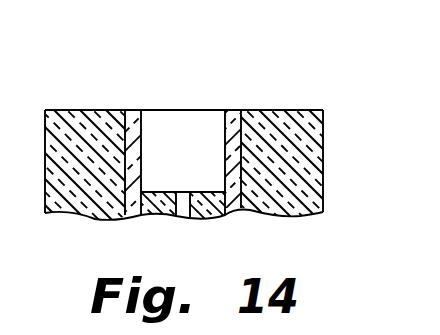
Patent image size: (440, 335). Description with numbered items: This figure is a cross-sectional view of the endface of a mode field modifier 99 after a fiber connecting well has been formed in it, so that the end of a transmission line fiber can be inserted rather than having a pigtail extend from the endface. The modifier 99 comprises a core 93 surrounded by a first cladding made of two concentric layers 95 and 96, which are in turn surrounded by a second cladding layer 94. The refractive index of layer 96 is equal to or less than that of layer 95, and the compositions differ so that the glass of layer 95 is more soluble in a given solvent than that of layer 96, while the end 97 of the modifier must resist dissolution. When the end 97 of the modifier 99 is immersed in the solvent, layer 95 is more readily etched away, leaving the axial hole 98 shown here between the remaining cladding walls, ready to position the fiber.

The core 93 is at (182, 194).
The second cladding layer 94 is at (283, 125).
The first cladding layer (inner concentric layer) 95 is at (205, 216).
The first cladding layer (outer concentric layer) 96 is at (137, 122).
The end of modifier 97 is at (83, 112).
The hole 98 is at (236, 132).
The mode field modifier 99 is at (323, 144).